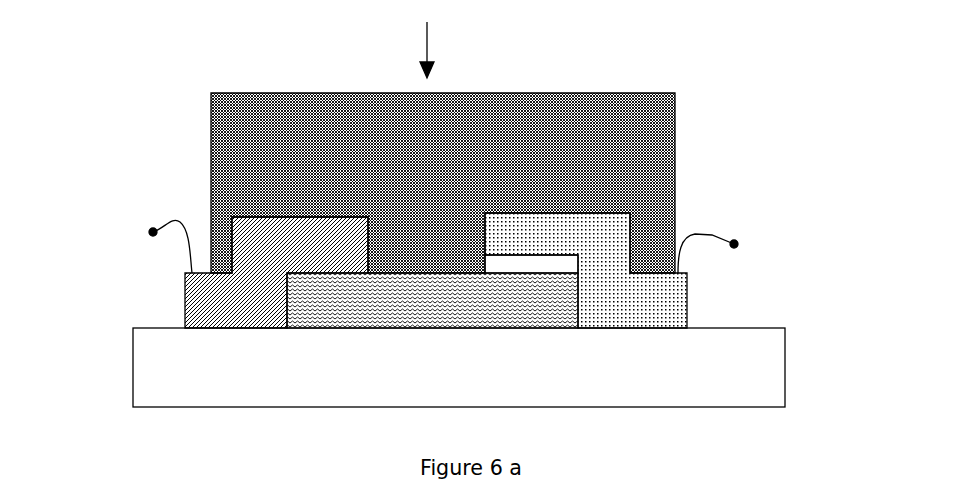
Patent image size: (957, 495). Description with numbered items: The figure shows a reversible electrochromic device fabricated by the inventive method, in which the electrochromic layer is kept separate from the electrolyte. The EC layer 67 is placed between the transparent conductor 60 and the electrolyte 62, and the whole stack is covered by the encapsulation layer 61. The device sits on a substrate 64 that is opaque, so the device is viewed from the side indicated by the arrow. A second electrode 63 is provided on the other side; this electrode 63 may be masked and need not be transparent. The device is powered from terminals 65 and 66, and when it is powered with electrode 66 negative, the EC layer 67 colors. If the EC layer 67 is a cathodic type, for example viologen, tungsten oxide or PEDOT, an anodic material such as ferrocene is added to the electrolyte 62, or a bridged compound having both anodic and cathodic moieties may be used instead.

The transparent conductor 60 is at (603, 312).
The encapsulation layer 61 is at (583, 138).
The electrolyte 62 is at (563, 288).
The electrode 63 is at (200, 305).
The substrate 64 is at (193, 373).
The terminal 65 is at (153, 232).
The terminal 66 is at (734, 244).
The EC layer 67 is at (542, 262).